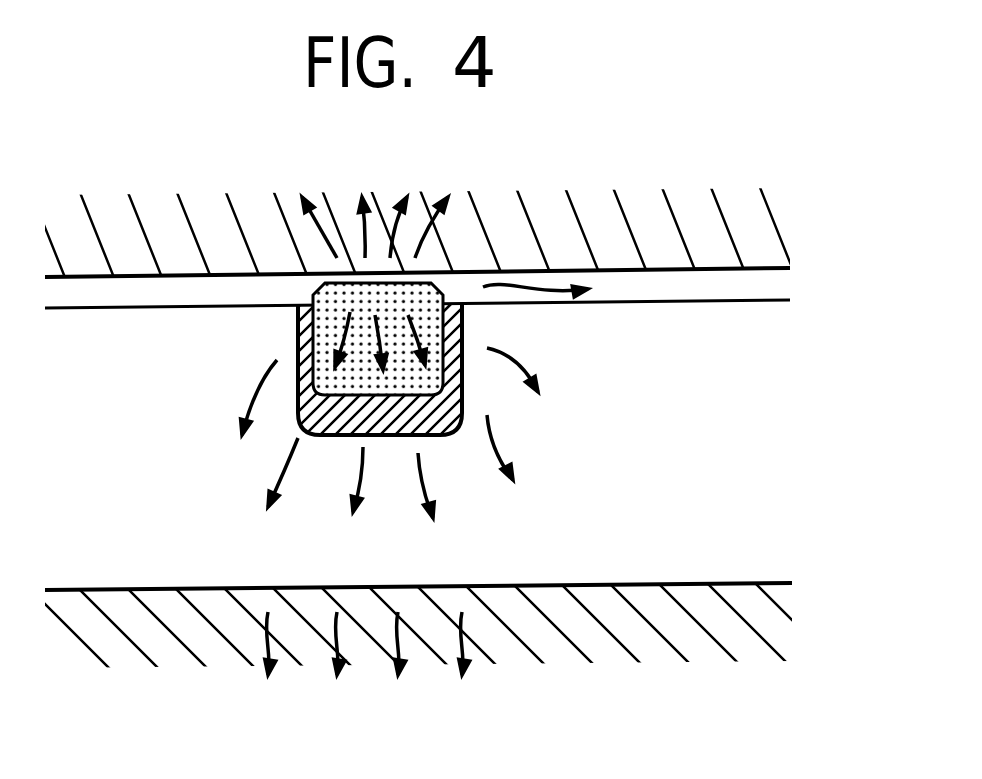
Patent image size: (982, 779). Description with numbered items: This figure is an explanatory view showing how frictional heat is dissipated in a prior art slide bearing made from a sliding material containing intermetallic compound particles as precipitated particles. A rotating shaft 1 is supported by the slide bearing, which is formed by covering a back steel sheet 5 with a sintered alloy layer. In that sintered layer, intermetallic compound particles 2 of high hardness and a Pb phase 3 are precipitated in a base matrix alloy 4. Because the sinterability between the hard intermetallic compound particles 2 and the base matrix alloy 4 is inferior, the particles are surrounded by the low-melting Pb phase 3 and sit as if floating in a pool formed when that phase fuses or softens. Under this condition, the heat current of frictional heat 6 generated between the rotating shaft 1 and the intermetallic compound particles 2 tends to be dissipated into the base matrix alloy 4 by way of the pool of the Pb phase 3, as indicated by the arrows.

The rotating shaft 1 is at (735, 225).
The intermetallic compound particles 2 is at (318, 293).
The Pb phase 3 is at (452, 327).
The base matrix alloy 4 is at (672, 463).
The back steel sheet 5 is at (743, 635).
The heat current of frictional heat 6 is at (497, 435).